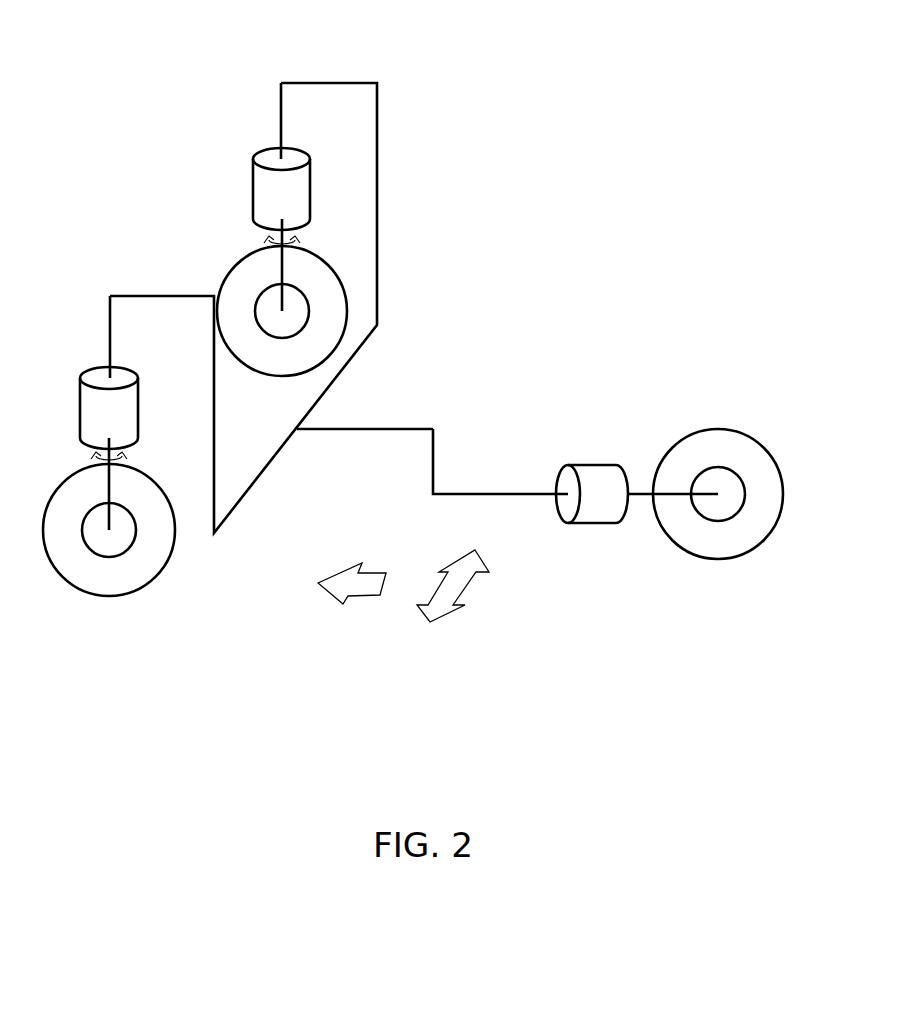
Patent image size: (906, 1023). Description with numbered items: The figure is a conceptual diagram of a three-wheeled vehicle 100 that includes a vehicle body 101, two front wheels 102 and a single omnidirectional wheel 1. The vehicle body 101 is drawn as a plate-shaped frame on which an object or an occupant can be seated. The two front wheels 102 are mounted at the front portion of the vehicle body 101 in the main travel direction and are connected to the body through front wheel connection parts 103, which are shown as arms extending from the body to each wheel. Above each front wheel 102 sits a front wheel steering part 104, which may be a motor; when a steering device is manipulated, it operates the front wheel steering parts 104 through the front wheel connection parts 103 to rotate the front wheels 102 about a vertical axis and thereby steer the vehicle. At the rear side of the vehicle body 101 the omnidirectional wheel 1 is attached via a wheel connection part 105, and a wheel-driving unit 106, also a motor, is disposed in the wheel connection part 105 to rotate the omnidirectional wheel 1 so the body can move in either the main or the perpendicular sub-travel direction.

The omnidirectional wheel 1 is at (721, 582).
The three-wheeled vehicle 100 is at (352, 703).
The vehicle body 101 is at (308, 436).
The front wheels 102 is at (282, 377).
The front wheel connection parts 103 is at (328, 83).
The front wheel steering parts 104 is at (258, 190).
The wheel connection part 105 is at (497, 492).
The wheel-driving unit 106 is at (599, 470).